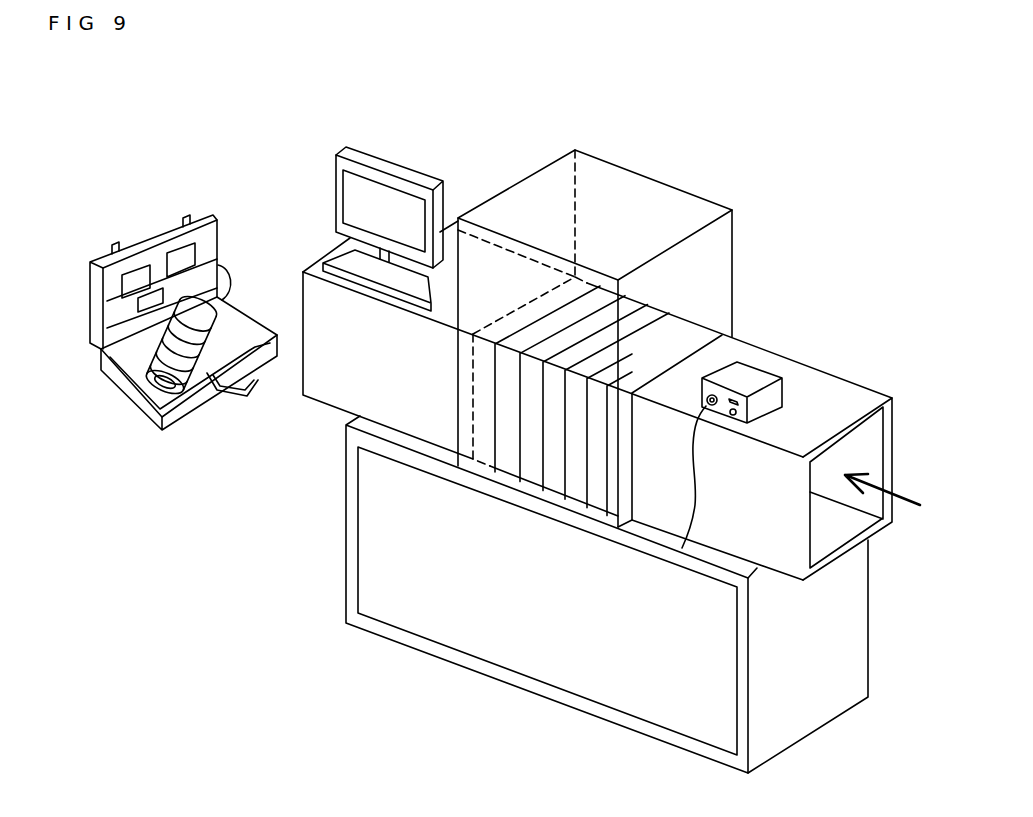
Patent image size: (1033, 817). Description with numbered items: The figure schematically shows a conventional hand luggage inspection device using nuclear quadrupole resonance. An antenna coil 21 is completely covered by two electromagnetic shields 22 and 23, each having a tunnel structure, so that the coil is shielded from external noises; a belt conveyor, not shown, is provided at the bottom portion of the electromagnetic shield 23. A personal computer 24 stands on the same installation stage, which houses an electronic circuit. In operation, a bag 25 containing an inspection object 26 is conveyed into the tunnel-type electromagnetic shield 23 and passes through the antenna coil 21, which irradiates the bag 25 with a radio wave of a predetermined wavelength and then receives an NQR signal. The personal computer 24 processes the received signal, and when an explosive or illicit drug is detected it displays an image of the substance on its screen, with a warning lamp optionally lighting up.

The antenna coil 21 is at (682, 313).
The electromagnetic shield 22 is at (632, 188).
The electromagnetic shield 23 is at (828, 533).
The personal computer 24 is at (353, 193).
The bag 25 is at (137, 362).
The inspection object 26 is at (177, 374).